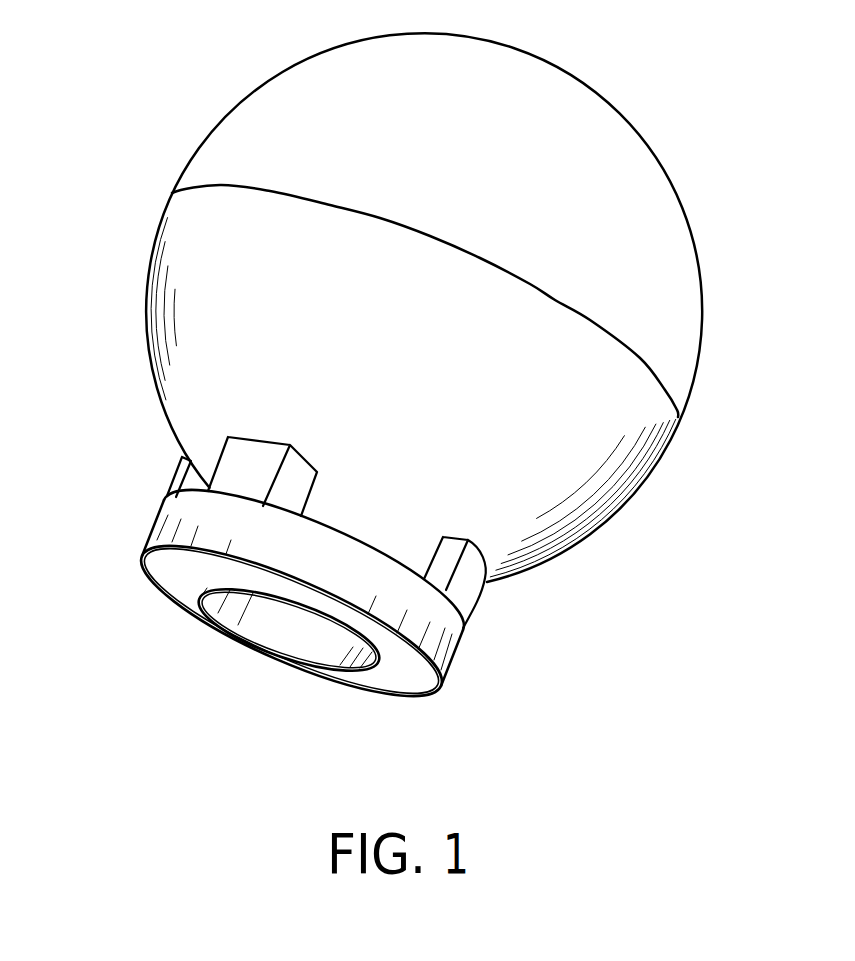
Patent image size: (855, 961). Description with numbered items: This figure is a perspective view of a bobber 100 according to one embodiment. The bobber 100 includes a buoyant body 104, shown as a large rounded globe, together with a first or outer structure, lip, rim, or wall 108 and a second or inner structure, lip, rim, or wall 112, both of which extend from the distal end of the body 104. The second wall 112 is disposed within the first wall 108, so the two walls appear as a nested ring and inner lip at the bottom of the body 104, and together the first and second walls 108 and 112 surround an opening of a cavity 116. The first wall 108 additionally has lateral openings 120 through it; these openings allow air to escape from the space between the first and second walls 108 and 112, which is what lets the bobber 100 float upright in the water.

The bobber 100 is at (605, 36).
The buoyant body 104 is at (672, 439).
The first wall 108 is at (460, 634).
The second wall 112 is at (198, 610).
The cavity 116 is at (258, 686).
The lateral openings 120 is at (155, 470).